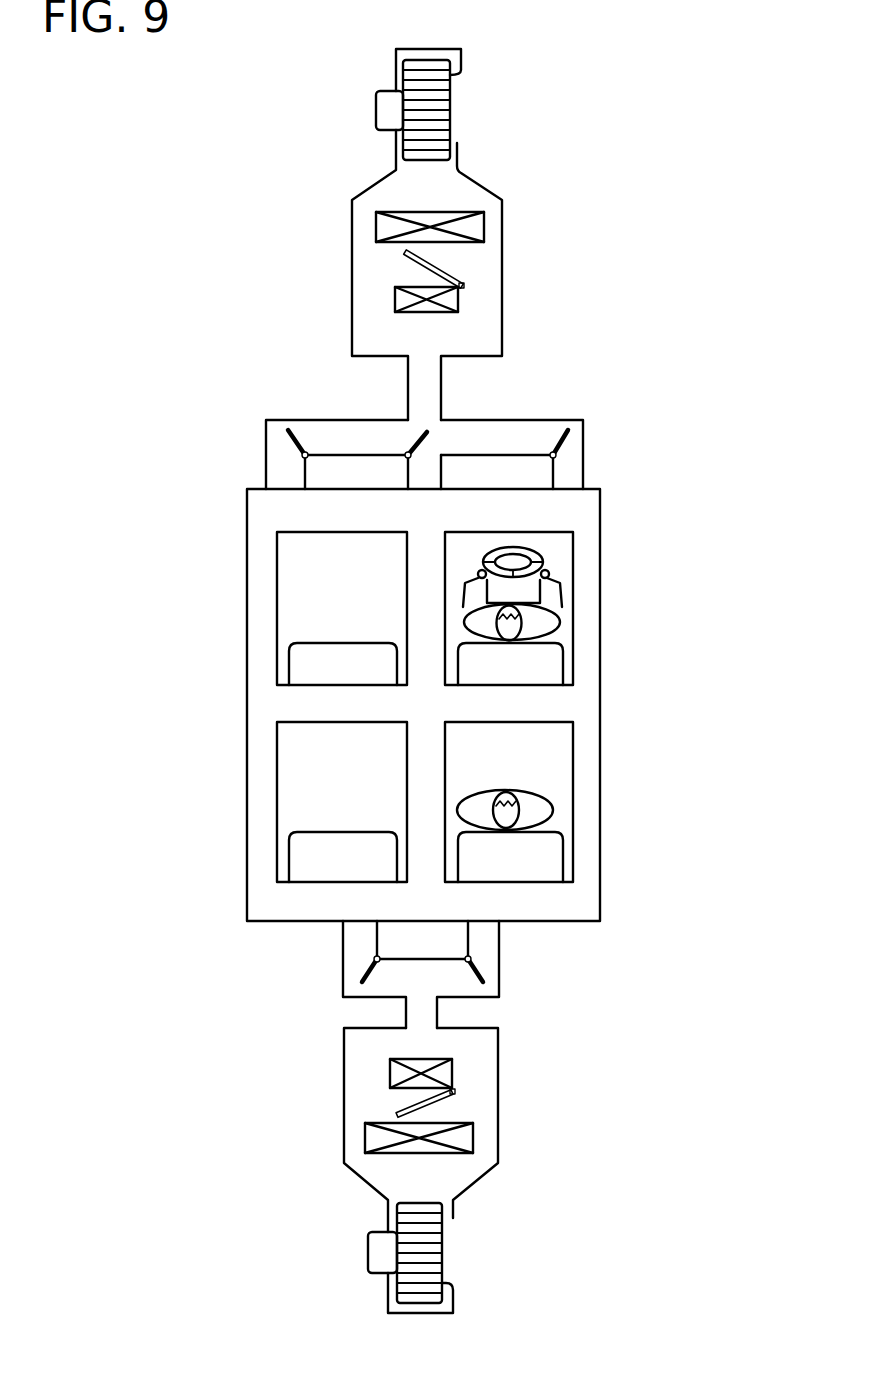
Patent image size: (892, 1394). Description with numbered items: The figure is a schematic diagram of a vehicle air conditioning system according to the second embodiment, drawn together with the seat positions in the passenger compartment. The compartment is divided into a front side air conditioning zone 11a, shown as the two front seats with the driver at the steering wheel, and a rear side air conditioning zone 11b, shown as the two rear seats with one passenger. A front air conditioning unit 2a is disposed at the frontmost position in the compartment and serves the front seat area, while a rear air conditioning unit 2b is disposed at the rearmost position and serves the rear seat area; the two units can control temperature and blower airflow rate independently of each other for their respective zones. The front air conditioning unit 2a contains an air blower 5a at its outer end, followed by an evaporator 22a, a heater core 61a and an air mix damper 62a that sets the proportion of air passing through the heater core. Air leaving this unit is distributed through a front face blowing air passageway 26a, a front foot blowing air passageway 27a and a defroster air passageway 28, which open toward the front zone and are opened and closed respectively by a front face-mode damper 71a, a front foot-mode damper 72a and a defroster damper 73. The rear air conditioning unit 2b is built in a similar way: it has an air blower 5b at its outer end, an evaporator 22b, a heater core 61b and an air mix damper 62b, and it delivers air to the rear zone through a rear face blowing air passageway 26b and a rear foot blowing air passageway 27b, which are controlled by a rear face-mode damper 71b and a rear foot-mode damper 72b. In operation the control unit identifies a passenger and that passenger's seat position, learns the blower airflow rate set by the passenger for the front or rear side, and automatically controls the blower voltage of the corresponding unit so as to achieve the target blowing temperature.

The front air conditioning unit 2a is at (492, 150).
The air blower 5a is at (358, 104).
The evaporator 22a is at (383, 223).
The heater core 61a is at (397, 302).
The air mix damper 62a is at (440, 262).
The front foot blowing air passageway 27a is at (275, 457).
The front face blowing air passageway 26a is at (573, 462).
The defroster air passageway 28 is at (427, 460).
The front foot-mode damper 72a is at (283, 438).
The defroster damper 73 is at (415, 442).
The front face-mode damper 71a is at (560, 422).
The front side air conditioning zone 11a is at (590, 523).
The rear side air conditioning zone 11b is at (587, 815).
The rear foot blowing air passageway 27b is at (352, 947).
The rear face blowing air passageway 26b is at (492, 952).
The rear foot-mode damper 72b is at (360, 968).
The rear face-mode damper 71b is at (485, 972).
The rear air conditioning unit 2b is at (523, 1103).
The air blower 5b is at (358, 1265).
The heater core 61b is at (397, 1073).
The evaporator 22b is at (372, 1138).
The air mix damper 62b is at (438, 1105).